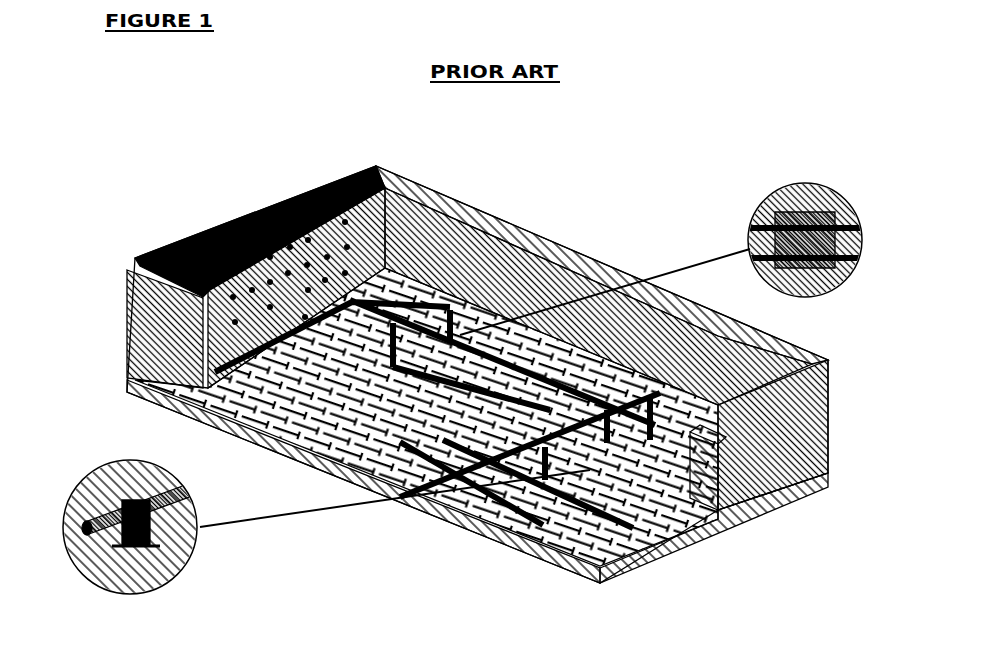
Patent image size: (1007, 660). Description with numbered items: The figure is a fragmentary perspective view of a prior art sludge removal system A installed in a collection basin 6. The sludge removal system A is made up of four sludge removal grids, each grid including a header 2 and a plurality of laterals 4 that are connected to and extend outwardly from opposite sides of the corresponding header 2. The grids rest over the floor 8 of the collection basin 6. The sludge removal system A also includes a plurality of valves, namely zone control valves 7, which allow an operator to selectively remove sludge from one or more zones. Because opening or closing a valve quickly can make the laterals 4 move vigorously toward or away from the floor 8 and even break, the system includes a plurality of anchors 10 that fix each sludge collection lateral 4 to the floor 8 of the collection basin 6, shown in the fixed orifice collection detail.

The sludge removal system A is at (575, 190).
The header 2 is at (288, 362).
The laterals 4 is at (320, 417).
The collection basin 6 is at (820, 448).
The zone control valves 7 is at (815, 203).
The floor 8 is at (613, 550).
The anchors 10 is at (150, 543).